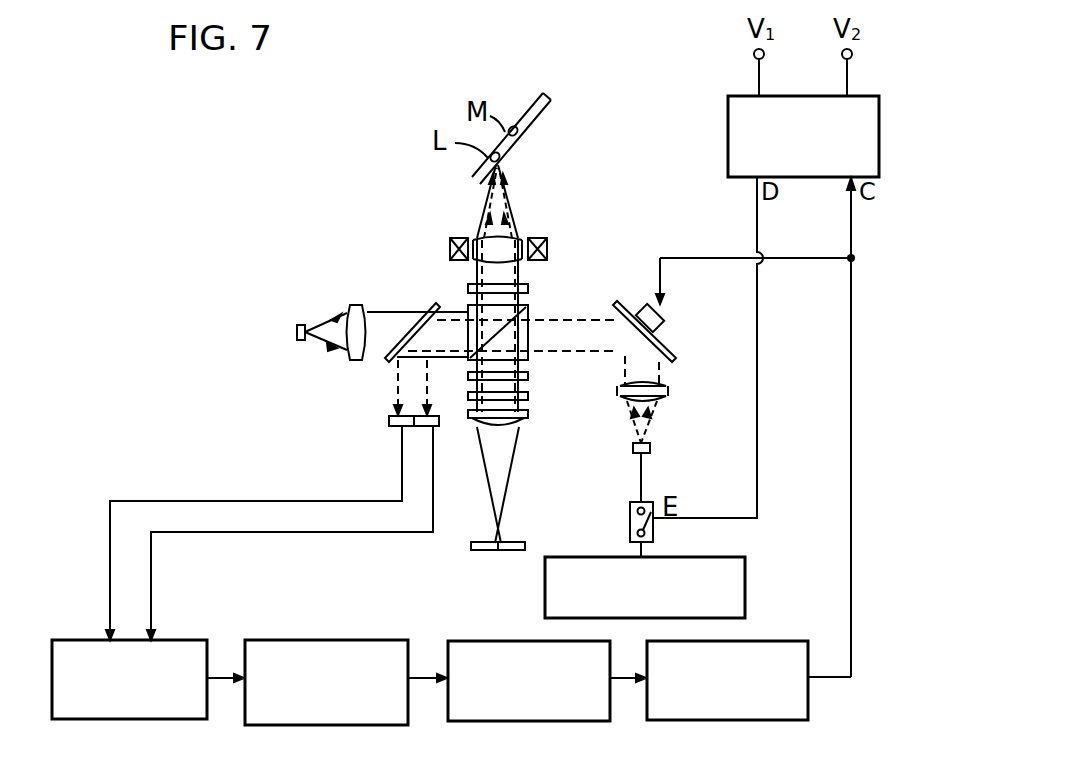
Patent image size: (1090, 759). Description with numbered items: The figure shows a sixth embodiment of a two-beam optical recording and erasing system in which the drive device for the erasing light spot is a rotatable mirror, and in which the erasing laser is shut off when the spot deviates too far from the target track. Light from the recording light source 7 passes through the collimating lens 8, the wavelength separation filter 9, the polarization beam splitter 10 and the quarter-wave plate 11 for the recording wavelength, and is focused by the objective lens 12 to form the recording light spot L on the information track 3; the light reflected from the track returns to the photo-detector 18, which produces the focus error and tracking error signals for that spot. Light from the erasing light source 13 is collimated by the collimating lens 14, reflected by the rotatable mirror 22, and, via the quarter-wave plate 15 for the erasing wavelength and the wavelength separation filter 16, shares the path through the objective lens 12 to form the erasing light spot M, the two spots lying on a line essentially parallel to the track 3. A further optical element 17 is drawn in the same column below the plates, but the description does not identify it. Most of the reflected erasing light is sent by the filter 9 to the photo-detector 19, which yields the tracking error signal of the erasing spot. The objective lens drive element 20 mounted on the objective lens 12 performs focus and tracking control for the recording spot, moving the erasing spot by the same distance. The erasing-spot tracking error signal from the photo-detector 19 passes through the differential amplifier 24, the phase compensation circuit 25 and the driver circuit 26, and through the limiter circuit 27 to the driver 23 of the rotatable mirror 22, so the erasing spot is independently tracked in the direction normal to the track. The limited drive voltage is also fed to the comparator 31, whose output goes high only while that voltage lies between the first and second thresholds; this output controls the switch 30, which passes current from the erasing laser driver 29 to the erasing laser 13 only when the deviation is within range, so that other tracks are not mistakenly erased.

The information track 3 is at (548, 100).
The recording light source 7 is at (300, 322).
The collimating lens 8 is at (352, 304).
The wavelength separation filter 9 is at (430, 302).
The polarization beam splitter 10 is at (528, 306).
The lambda-one quarter-wave plate 11 is at (528, 290).
The objective lens 12 is at (530, 240).
The erasing light source 13 is at (650, 448).
The collimating lens 14 is at (668, 390).
The lambda-two quarter-wave plate 15 is at (528, 376).
The wavelength separation filter 16 is at (528, 396).
The objective lens 17 is at (524, 420).
The photo-detector 18 is at (525, 545).
The photo-detector 19 is at (389, 421).
The objective lens drive element 20 is at (452, 242).
The rotatable mirror 22 is at (676, 355).
The driver 23 is at (666, 322).
The differential amplifier 24 is at (192, 640).
The phase compensation circuit 25 is at (333, 640).
The driver circuit 26 is at (488, 641).
The limiter circuit 27 is at (765, 641).
The erasing laser driver 29 is at (745, 590).
The switch 30 is at (630, 505).
The comparator 31 is at (882, 135).